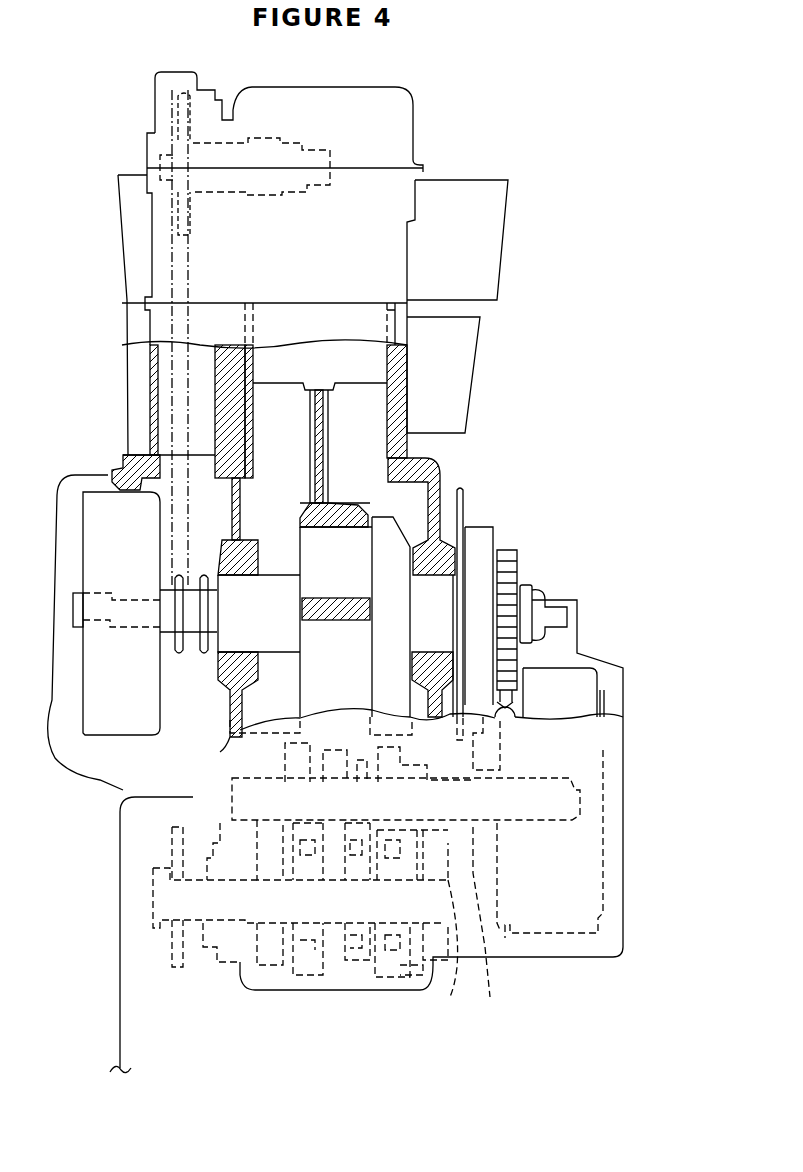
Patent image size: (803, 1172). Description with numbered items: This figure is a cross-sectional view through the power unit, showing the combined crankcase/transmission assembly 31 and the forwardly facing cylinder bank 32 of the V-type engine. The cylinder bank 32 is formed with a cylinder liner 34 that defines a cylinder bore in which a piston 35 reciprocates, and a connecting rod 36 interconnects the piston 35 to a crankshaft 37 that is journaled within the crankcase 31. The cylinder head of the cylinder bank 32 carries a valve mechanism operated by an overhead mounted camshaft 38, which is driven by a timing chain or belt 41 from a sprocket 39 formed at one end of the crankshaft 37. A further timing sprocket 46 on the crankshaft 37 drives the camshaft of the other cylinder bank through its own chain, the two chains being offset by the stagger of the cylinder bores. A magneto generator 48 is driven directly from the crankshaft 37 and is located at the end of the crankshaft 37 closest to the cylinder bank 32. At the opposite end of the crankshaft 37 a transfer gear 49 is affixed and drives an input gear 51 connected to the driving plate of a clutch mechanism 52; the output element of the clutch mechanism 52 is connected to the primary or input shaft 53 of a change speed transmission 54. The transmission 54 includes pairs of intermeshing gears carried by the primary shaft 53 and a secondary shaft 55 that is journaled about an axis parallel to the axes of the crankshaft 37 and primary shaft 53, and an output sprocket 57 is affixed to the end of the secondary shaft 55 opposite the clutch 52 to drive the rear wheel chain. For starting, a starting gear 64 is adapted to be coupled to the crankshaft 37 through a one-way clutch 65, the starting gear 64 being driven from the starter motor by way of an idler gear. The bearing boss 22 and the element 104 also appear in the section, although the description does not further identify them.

The crankshaft bearing boss 22 is at (240, 528).
The crankcase/transmission assembly 31 is at (442, 482).
The forwardly facing cylinder bank 32 is at (418, 138).
The cylinder liner 34 is at (252, 363).
The piston 35 is at (357, 385).
The connecting rod 36 is at (330, 457).
The crankshaft 37 is at (568, 613).
The overhead mounted camshaft 38 is at (303, 150).
The sprocket 39 is at (176, 657).
The timing chain 41 is at (172, 402).
The timing sprocket 46 is at (204, 657).
The magneto generator 48 is at (83, 707).
The transfer gear 49 is at (513, 548).
The input gear 51 is at (503, 952).
The clutch mechanism 52 is at (605, 715).
The primary shaft 53 is at (582, 803).
The change speed transmission 54 is at (363, 966).
The secondary shaft 55 is at (456, 955).
The output sprocket 57 is at (170, 955).
The starting gear 64 is at (465, 488).
The one-way clutch 65 is at (483, 527).
The shift fork 104 is at (499, 917).